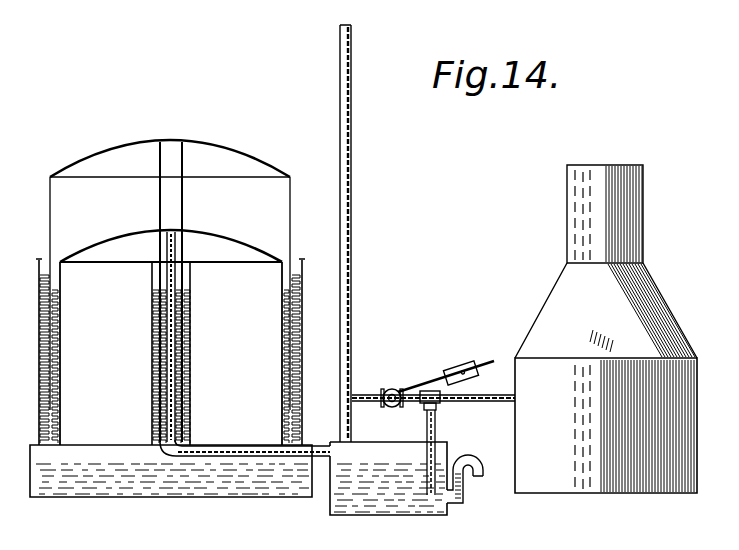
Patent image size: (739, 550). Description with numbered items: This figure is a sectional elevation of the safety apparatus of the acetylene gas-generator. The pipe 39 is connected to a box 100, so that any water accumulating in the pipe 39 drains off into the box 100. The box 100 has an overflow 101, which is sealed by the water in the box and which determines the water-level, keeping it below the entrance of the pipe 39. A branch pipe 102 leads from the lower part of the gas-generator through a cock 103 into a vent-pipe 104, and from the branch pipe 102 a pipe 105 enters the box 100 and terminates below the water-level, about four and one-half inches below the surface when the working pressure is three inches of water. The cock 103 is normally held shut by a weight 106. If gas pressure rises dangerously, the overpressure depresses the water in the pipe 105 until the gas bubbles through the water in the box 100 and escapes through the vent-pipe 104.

The pipe 39 is at (190, 372).
The box 100 is at (400, 507).
The overflow 101 is at (484, 467).
The branch pipe 102 is at (433, 387).
The cock 103 is at (398, 384).
The vent-pipe 104 is at (352, 190).
The pipe 105 is at (426, 455).
The weight 106 is at (460, 368).